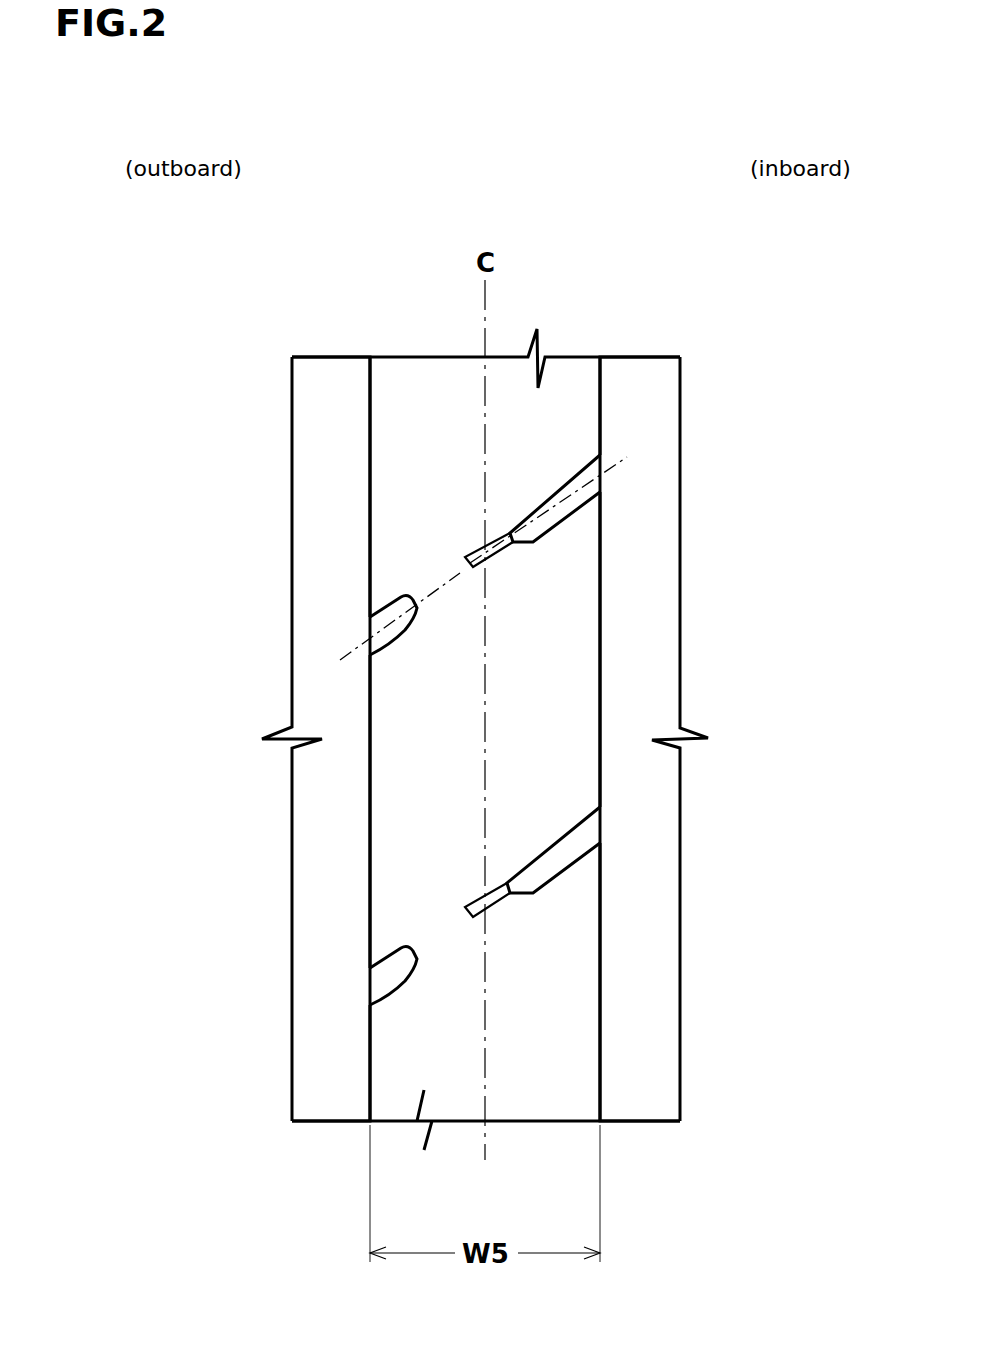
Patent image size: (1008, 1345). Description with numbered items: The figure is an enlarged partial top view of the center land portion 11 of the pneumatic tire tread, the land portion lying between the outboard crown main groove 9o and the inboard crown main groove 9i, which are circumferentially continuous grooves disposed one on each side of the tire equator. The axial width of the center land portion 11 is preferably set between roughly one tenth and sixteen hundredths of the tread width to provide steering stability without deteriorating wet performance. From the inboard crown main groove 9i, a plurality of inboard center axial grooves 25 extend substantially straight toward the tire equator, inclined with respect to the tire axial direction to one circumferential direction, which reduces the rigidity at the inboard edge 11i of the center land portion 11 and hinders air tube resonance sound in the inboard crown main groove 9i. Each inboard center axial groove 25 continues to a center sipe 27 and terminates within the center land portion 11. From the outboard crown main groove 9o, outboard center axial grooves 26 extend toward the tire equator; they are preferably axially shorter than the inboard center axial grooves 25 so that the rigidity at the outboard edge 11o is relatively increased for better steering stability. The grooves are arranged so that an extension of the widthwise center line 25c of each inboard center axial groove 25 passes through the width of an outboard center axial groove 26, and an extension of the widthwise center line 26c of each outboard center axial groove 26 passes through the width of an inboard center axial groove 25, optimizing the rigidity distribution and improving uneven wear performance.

The outboard crown main groove 9o is at (336, 397).
The inboard crown main groove 9i is at (625, 390).
The center land portion 11 is at (433, 397).
The outboard edge of the center land portion 11o is at (370, 737).
The inboard edge of the center land portion 11i is at (600, 733).
The inboard center axial groove 25 is at (547, 522).
The widthwise center line of the inboard center axial groove 25c is at (617, 463).
The outboard center axial groove 26 is at (392, 625).
The widthwise center line of the outboard center axial groove 26c is at (425, 597).
The center sipe 27 is at (477, 554).